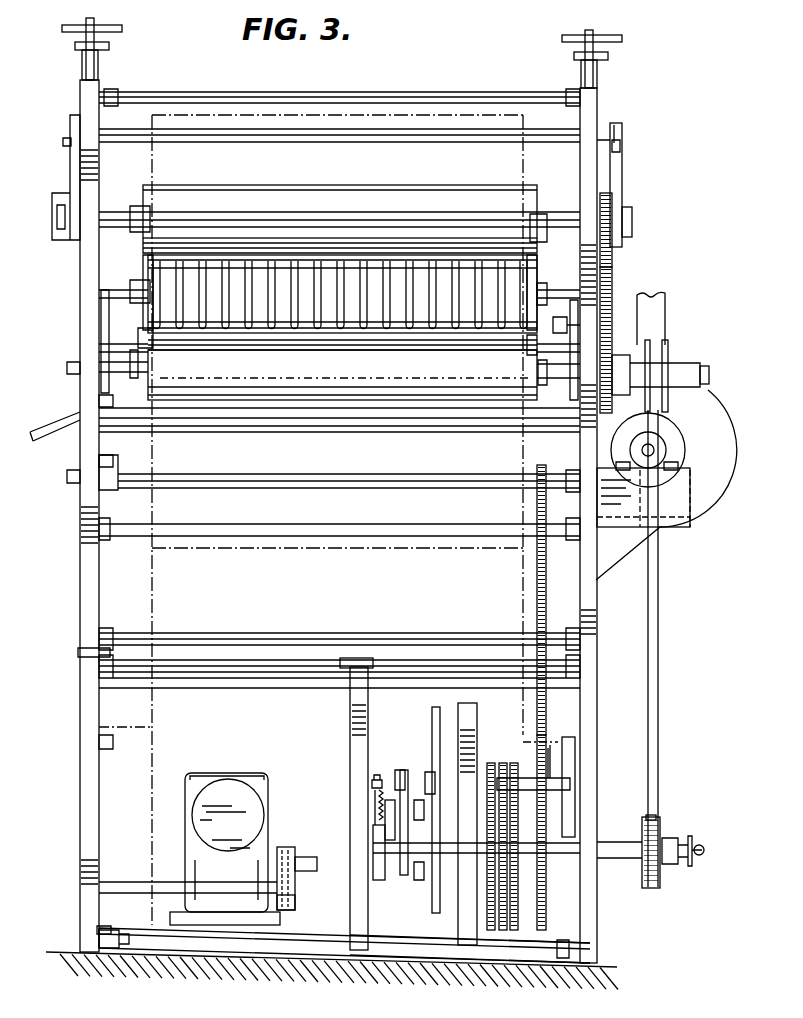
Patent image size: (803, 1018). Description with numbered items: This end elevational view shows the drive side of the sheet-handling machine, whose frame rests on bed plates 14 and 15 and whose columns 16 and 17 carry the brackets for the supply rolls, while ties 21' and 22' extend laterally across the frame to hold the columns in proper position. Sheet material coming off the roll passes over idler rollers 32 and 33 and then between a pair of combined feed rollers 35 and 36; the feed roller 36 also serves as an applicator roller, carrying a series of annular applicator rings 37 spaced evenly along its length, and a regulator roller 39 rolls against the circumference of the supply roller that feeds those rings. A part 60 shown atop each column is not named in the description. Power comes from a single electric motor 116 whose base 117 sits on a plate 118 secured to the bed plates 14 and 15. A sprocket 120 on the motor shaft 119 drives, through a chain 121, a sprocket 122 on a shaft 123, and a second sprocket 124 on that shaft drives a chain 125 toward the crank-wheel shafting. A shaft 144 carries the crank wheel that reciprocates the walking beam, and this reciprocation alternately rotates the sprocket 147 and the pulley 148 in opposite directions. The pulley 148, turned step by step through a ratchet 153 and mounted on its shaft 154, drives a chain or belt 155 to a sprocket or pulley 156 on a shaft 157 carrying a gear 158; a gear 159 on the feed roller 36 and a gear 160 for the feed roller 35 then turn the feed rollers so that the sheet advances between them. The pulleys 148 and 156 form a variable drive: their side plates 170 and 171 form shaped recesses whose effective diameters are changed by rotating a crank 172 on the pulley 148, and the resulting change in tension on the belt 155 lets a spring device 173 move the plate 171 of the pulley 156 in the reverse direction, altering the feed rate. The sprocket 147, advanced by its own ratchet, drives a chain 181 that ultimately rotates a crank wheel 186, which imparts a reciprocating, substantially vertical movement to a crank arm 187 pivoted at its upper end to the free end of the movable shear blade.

The bed plate 14 is at (571, 953).
The bed plate 15 is at (85, 937).
The column 16 is at (577, 827).
The column 17 is at (80, 812).
The tie 21' is at (339, 639).
The tie 22' is at (339, 90).
The idler roller 32 is at (288, 222).
The idler roller 33 is at (298, 345).
The feed roller 35 is at (208, 196).
The feed roller 36 is at (148, 263).
The annular applicator ring 37 is at (250, 330).
The regulator roller 39 is at (192, 383).
The adjusting screw 60 is at (93, 22).
The electric motor 116 is at (268, 810).
The base 117 is at (231, 925).
The plate 118 is at (136, 928).
The motor shaft 119 is at (309, 861).
The sprocket 120 is at (289, 849).
The chain 121 is at (295, 879).
The sprocket 122 is at (294, 908).
The shaft 123 is at (395, 892).
The sprocket 124 is at (520, 906).
The chain 125 is at (556, 874).
The shaft 144 is at (530, 778).
The sprocket 147 is at (545, 805).
The pulley 148 is at (660, 822).
The ratchet 153 is at (399, 866).
The shaft 154 is at (449, 846).
The chain 155 is at (658, 647).
The sprocket 156 is at (667, 351).
The shaft 157 is at (625, 370).
The gear 158 is at (657, 423).
The gear 159 is at (614, 282).
The gear 160 is at (613, 260).
The side plate 170 is at (660, 887).
The side plate 171 is at (707, 372).
The crank 172 is at (704, 853).
The spring device 173 is at (709, 385).
The chain 181 is at (549, 722).
The crank wheel 186 is at (698, 520).
The crank arm 187 is at (665, 300).